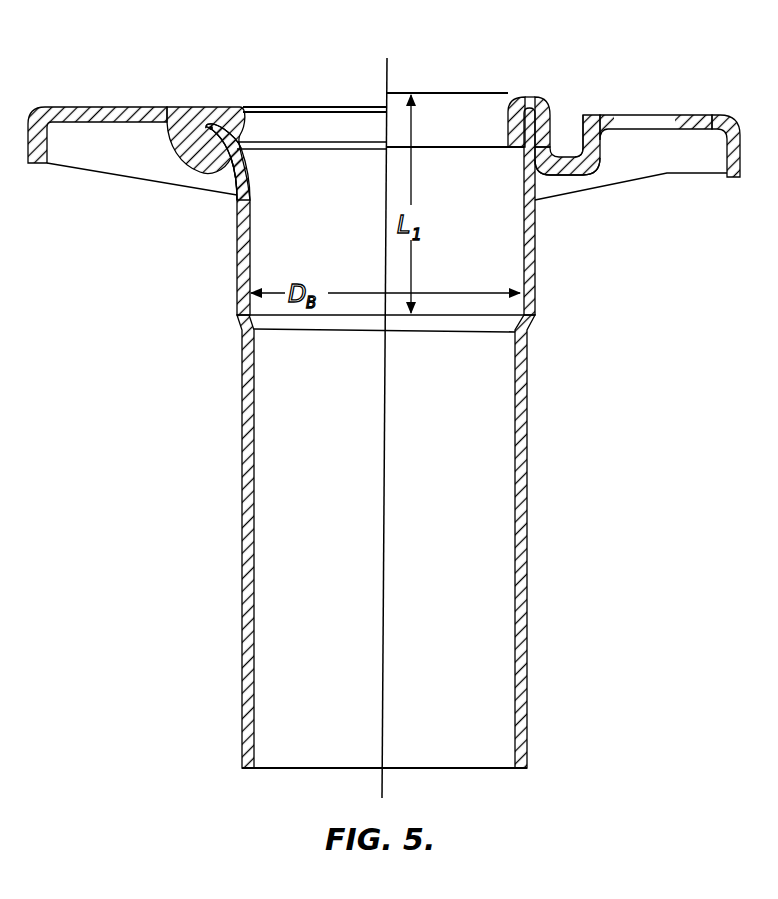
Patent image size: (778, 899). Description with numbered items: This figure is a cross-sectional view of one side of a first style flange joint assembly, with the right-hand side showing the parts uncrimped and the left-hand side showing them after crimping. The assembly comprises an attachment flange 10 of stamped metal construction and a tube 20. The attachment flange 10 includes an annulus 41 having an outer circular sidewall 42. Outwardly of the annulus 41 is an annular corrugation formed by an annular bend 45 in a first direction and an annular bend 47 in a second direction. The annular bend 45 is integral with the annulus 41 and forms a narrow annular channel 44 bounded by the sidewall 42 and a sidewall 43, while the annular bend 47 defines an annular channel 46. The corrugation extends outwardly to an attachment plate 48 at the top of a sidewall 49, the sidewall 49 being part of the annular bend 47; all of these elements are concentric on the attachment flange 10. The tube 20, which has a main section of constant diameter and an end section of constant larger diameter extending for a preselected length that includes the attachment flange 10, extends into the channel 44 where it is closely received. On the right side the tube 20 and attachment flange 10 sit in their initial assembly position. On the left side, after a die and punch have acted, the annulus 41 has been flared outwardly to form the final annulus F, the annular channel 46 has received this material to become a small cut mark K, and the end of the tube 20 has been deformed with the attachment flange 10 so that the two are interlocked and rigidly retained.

The attachment flange 10 is at (566, 132).
The tube 20 is at (412, 409).
The annulus 41 is at (445, 105).
The outer circular sidewall 42 is at (508, 118).
The sidewall 43 is at (586, 136).
The narrow annular channel 44 is at (524, 162).
The annular bend 45 is at (527, 95).
The annular channel 46 is at (584, 130).
The annular bend 47 is at (582, 175).
The attachment plate 48 is at (674, 115).
The sidewall 49 is at (596, 114).
The small cut mark K is at (186, 108).
The final annulus F is at (238, 112).